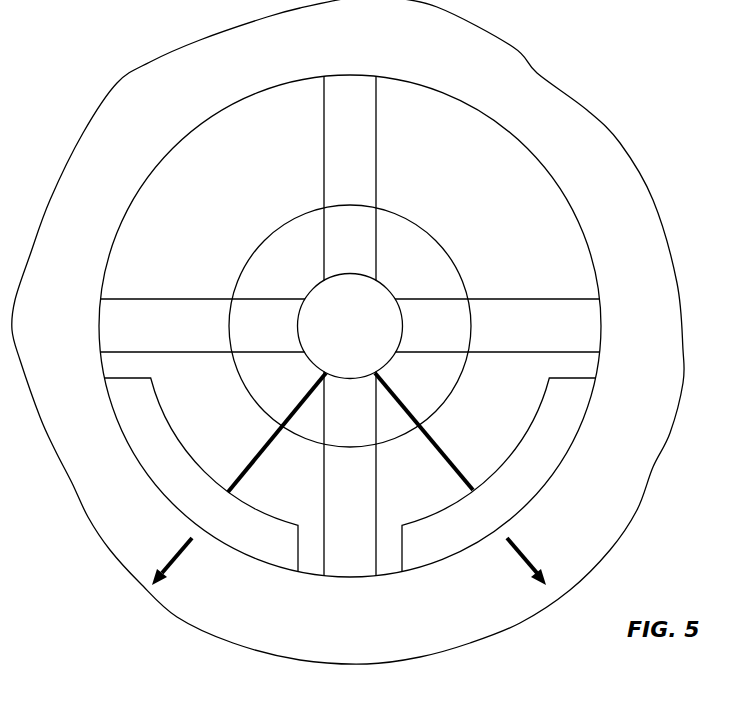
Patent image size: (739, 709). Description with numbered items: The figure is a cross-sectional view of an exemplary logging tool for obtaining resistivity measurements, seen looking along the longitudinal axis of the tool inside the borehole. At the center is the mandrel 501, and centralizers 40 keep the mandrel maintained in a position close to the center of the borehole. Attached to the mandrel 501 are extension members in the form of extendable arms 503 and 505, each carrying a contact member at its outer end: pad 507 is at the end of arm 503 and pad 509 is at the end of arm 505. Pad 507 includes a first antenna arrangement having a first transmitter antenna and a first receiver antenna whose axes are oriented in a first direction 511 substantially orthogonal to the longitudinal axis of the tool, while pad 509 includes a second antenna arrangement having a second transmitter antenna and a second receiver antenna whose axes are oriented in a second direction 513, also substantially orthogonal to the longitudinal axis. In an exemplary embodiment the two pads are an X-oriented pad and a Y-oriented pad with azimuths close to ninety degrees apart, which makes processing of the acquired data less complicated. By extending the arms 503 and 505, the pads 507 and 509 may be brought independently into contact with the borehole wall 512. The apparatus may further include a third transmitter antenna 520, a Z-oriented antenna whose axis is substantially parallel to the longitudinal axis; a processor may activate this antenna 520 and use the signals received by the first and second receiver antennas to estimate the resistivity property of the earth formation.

The centralizers 40 is at (377, 197).
The mandrel 501 is at (377, 280).
The extendable arm 503 is at (318, 378).
The extendable arm 505 is at (385, 378).
The pad 507 is at (143, 471).
The pad 509 is at (549, 484).
The first direction 511 is at (180, 553).
The second direction 513 is at (520, 553).
The borehole wall 512 is at (141, 58).
The third transmitter antenna 520 is at (283, 222).